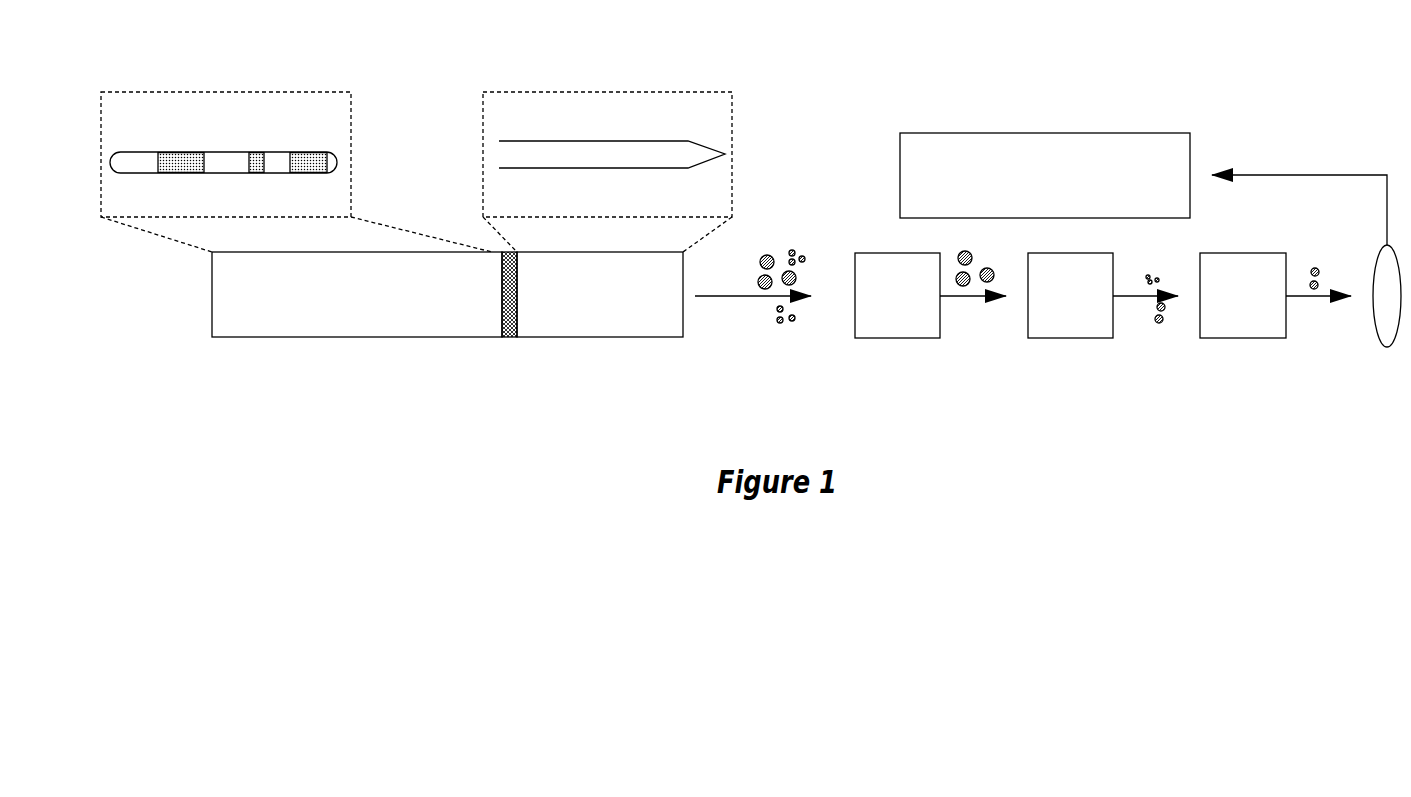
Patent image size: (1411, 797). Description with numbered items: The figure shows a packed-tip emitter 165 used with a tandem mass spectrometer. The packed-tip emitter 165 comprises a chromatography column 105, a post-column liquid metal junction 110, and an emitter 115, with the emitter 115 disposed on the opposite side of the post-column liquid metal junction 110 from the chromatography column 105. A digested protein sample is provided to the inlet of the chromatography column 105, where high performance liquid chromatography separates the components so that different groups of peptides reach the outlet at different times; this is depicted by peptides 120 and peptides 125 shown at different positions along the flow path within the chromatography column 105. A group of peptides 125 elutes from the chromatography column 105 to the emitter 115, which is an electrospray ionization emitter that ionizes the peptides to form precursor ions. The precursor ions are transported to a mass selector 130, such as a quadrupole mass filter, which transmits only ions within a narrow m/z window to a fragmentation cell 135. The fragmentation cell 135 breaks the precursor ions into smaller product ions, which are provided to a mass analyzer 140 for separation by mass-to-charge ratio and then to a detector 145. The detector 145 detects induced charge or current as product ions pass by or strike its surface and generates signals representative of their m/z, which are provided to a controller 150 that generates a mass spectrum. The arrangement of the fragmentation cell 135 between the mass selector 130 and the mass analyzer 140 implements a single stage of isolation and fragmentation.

The chromatography column 105 is at (482, 306).
The post-column liquid metal junction 110 is at (508, 337).
The emitter 115 is at (649, 306).
The peptides 120 is at (251, 122).
The peptides 125 is at (306, 125).
The mass selector 130 is at (917, 307).
The fragmentation cell 135 is at (1088, 307).
The mass analyzer 140 is at (1262, 307).
The detector 145 is at (1385, 347).
The controller 150 is at (1143, 189).
The packed-tip emitter 165 is at (290, 413).